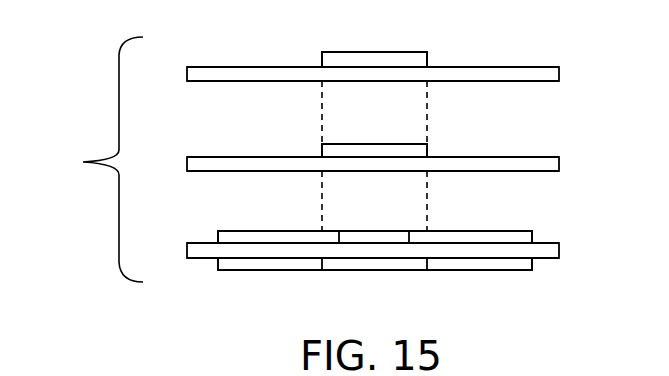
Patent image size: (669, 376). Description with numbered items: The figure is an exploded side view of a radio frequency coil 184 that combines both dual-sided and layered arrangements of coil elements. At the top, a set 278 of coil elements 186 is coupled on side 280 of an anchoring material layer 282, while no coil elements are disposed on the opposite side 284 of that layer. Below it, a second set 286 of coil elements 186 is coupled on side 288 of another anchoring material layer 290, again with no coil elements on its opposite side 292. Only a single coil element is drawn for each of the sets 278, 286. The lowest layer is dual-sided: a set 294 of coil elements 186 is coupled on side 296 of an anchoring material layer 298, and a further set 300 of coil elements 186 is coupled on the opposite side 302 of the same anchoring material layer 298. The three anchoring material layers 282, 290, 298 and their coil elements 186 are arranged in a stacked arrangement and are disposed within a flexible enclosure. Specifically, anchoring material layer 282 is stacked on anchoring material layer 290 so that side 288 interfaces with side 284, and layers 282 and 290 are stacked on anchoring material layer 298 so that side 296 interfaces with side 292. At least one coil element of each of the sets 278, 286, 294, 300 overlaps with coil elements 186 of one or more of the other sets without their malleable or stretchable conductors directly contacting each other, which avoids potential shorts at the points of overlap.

The radio frequency coil 184 is at (88, 159).
The coil elements 186 is at (405, 52).
The set of coil elements 278 is at (365, 42).
The side of anchoring material layer 280 is at (560, 67).
The anchoring material layer 282 is at (560, 74).
The opposite side of anchoring material layer 284 is at (547, 82).
The set of coil elements 286 is at (406, 124).
The side of anchoring material layer 288 is at (560, 157).
The anchoring material layer 290 is at (560, 164).
The opposite side of anchoring material layer 292 is at (547, 172).
The set of coil elements 294 is at (406, 216).
The side of anchoring material layer 296 is at (560, 243).
The anchoring material layer 298 is at (560, 251).
The set of coil elements 300 is at (376, 284).
The opposite side of anchoring material layer 302 is at (544, 260).